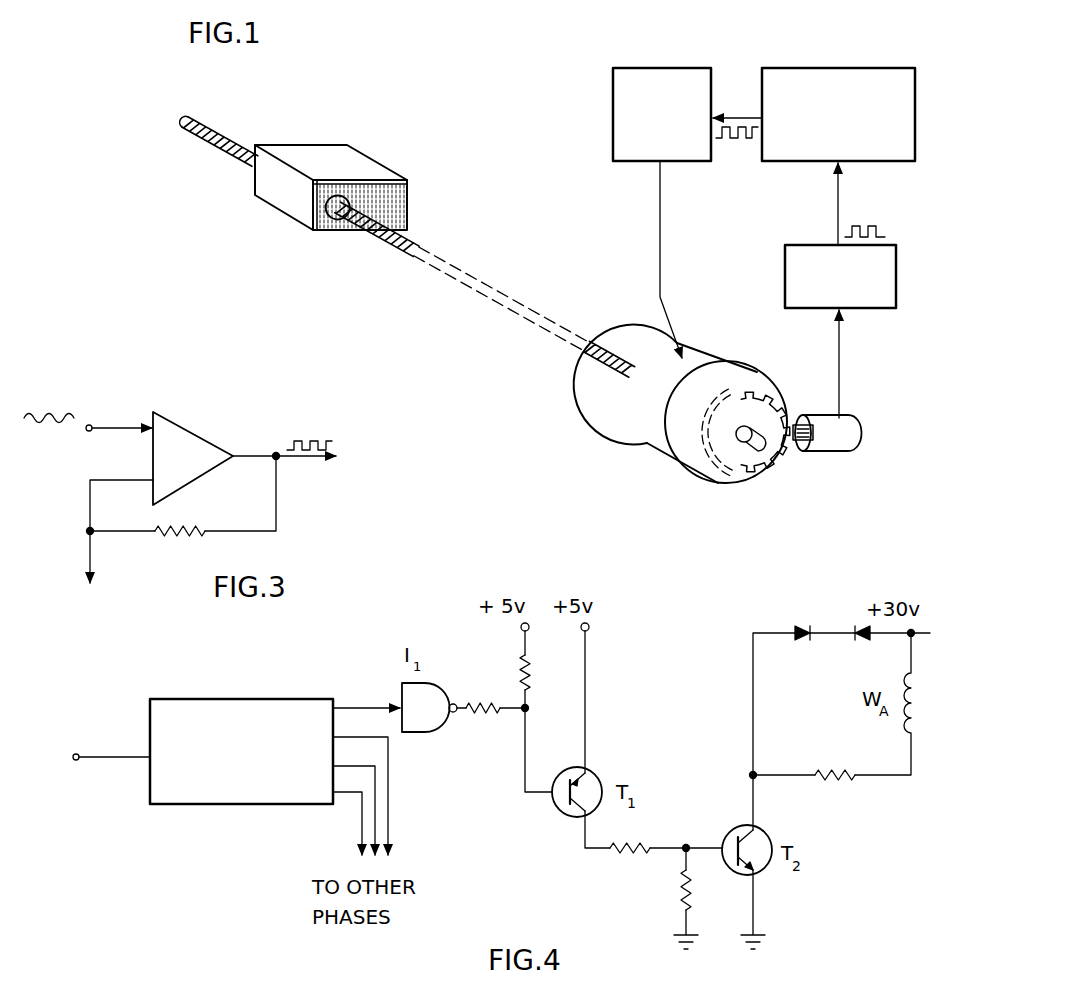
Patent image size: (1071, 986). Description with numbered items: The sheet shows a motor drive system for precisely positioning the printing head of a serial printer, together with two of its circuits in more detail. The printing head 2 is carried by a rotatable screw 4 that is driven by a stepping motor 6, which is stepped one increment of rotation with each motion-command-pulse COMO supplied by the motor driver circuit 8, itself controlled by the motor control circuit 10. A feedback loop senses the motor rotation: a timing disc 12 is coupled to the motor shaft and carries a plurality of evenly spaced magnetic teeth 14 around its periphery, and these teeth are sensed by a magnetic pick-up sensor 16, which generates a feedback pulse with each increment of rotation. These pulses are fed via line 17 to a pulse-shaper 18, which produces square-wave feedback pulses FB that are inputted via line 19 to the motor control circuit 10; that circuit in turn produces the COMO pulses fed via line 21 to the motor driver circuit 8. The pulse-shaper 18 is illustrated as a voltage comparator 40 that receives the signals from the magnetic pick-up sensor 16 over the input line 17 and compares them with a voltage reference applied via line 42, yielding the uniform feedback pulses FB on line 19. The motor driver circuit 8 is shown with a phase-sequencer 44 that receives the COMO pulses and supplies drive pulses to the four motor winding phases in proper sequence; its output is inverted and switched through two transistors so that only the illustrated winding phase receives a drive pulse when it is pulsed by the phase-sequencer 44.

In FIG. 1, the printing head 2 is at (383, 171).
In FIG. 1, the rotatable screw 4 is at (468, 274).
In FIG. 1, the stepping motor 6 is at (648, 352).
In FIG. 1, the motor driver circuit 8 is at (613, 105).
In FIG. 1, the motor control circuit 10 is at (786, 163).
In FIG. 1, the timing disc 12 is at (758, 470).
In FIG. 1, the magnetic teeth 14 is at (781, 463).
In FIG. 1, the magnetic pick-up sensor 16 is at (861, 431).
In FIG. 1, the line 17 is at (843, 368).
In FIG. 3, the line 17 is at (107, 427).
In FIG. 1, the pulse-shaper 18 is at (785, 275).
In FIG. 1, the line 19 is at (843, 199).
In FIG. 3, the line 19 is at (244, 452).
In FIG. 1, the line 21 is at (733, 116).
In FIG. 4, the line 21 is at (106, 762).
In FIG. 3, the voltage comparator 40 is at (198, 437).
In FIG. 3, the line 42 is at (88, 549).
In FIG. 4, the phase-sequencer 44 is at (253, 699).